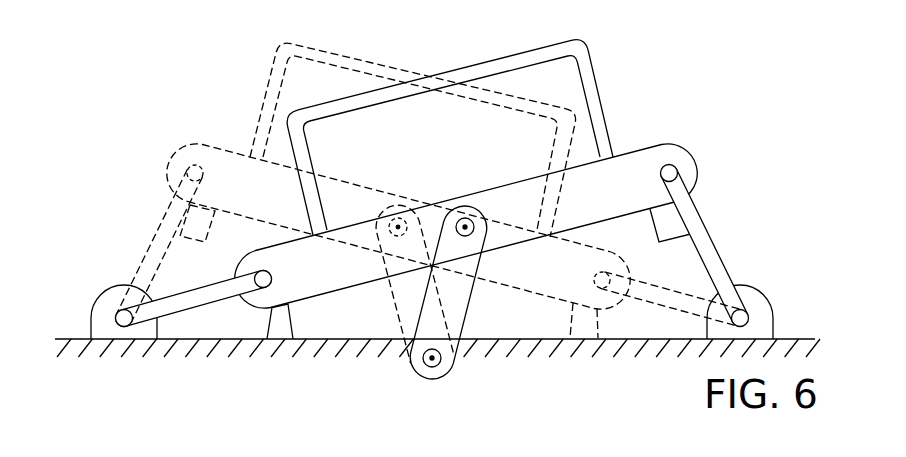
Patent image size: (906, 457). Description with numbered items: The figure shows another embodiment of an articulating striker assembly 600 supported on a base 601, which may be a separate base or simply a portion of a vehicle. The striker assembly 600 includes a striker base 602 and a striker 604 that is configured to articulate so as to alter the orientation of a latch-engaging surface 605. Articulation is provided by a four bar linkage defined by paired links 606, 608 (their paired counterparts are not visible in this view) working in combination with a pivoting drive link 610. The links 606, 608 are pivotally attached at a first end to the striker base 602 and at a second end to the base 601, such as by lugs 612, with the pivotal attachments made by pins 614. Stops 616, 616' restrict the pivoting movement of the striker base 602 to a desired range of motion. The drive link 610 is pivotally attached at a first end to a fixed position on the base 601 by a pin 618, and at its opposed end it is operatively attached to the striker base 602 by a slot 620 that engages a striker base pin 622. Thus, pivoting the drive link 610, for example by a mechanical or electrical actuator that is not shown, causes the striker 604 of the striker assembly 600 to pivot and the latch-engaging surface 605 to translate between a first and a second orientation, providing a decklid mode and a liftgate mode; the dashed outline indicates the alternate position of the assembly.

The articulating striker assembly 600 is at (170, 92).
The base 601 is at (70, 340).
The striker base 602 is at (228, 151).
The striker 604 is at (301, 37).
The latch-engaging surface 605 is at (377, 66).
The link 606 is at (160, 228).
The link 608 is at (707, 243).
The drive link 610 is at (400, 294).
The lug 612 is at (117, 292).
The pin 614 is at (185, 168).
The stop 616 is at (210, 281).
The stop 616' is at (663, 284).
The pin 618 is at (440, 362).
The slot 620 is at (390, 221).
The striker base pin 622 is at (463, 220).